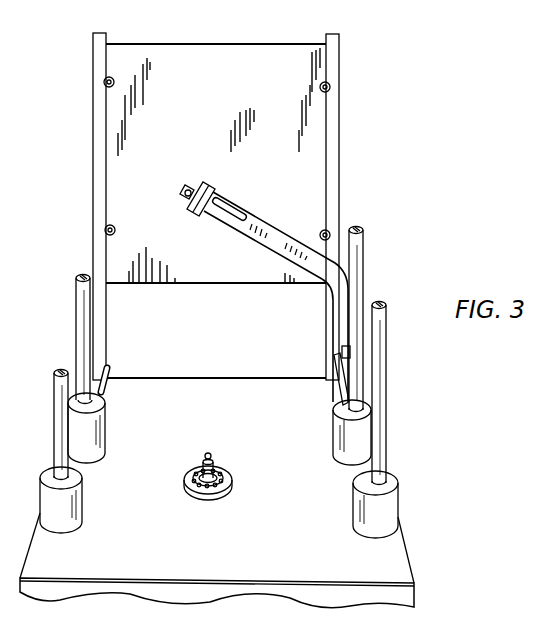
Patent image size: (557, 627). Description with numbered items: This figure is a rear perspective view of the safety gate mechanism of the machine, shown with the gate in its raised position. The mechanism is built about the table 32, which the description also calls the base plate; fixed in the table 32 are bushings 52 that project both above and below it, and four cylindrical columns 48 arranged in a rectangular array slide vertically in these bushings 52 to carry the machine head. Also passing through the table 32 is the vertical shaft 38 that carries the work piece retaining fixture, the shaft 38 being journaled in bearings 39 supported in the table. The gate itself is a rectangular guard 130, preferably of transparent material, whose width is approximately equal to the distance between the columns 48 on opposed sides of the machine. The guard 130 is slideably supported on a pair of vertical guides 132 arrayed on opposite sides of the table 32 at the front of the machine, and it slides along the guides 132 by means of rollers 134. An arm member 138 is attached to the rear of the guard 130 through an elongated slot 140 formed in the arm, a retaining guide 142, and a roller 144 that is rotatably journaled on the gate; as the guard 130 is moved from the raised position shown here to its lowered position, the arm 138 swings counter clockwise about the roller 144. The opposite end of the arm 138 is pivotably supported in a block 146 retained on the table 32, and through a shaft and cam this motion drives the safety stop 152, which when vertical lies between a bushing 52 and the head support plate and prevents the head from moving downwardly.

The table 32 is at (388, 565).
The vertical shaft 38 is at (214, 460).
The bearings 39 is at (218, 486).
The cylindrical columns 48 is at (84, 328).
The bushings 52 is at (98, 452).
The rectangular guard 130 is at (178, 54).
The vertical guides 132 is at (96, 42).
The rollers 134 is at (104, 81).
The arm member 138 is at (274, 240).
The elongated slot 140 is at (232, 210).
The retaining guide 142 is at (210, 190).
The roller 144 is at (192, 186).
The block 146 is at (338, 392).
The safety stop 152 is at (342, 352).